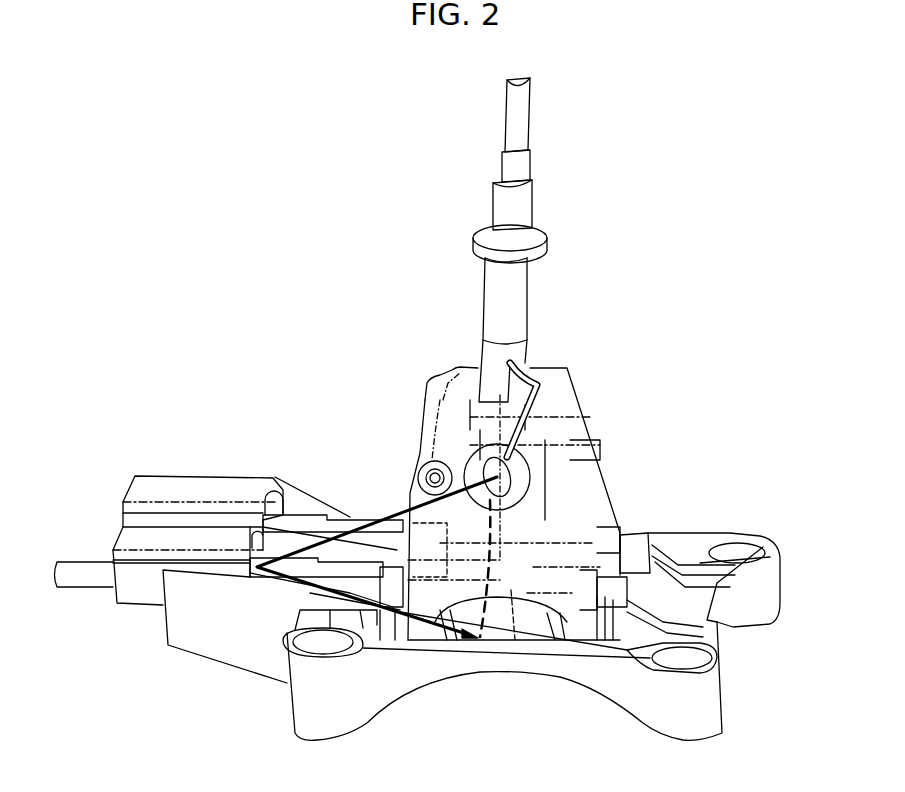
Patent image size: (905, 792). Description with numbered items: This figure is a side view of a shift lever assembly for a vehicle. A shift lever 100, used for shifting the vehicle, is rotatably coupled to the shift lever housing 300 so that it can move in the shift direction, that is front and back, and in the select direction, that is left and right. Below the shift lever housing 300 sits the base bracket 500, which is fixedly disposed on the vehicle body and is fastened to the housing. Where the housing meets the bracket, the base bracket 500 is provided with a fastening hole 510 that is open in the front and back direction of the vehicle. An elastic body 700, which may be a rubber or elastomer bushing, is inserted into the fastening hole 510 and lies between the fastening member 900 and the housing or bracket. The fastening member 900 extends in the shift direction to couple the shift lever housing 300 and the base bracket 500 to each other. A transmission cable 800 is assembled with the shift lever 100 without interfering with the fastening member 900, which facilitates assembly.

The shift lever 100 is at (512, 293).
The shift lever housing 300 is at (597, 430).
The base bracket 500 is at (753, 600).
The fastening hole 510 is at (650, 550).
The elastic body 700 is at (417, 647).
The transmission cable 800 is at (303, 570).
The fastening member 900 is at (513, 640).